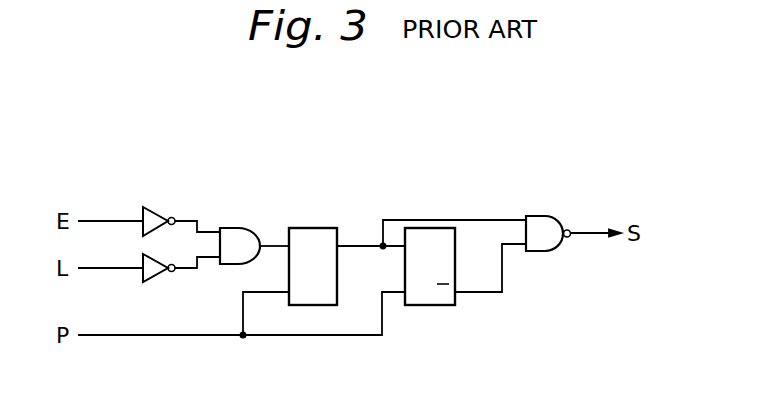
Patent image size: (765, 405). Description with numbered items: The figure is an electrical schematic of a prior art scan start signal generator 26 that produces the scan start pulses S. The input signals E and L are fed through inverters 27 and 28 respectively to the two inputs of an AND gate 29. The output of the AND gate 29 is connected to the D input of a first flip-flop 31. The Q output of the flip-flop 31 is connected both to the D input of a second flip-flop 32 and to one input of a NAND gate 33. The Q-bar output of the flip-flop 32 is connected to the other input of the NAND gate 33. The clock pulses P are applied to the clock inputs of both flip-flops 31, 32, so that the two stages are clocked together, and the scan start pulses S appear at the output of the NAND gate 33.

The scan start signal generator 26 is at (302, 170).
The inverter 27 is at (160, 207).
The inverter 28 is at (148, 282).
The AND gate 29 is at (238, 228).
The flip-flop 31 is at (318, 228).
The flip-flop 32 is at (436, 228).
The NAND gate 33 is at (548, 216).